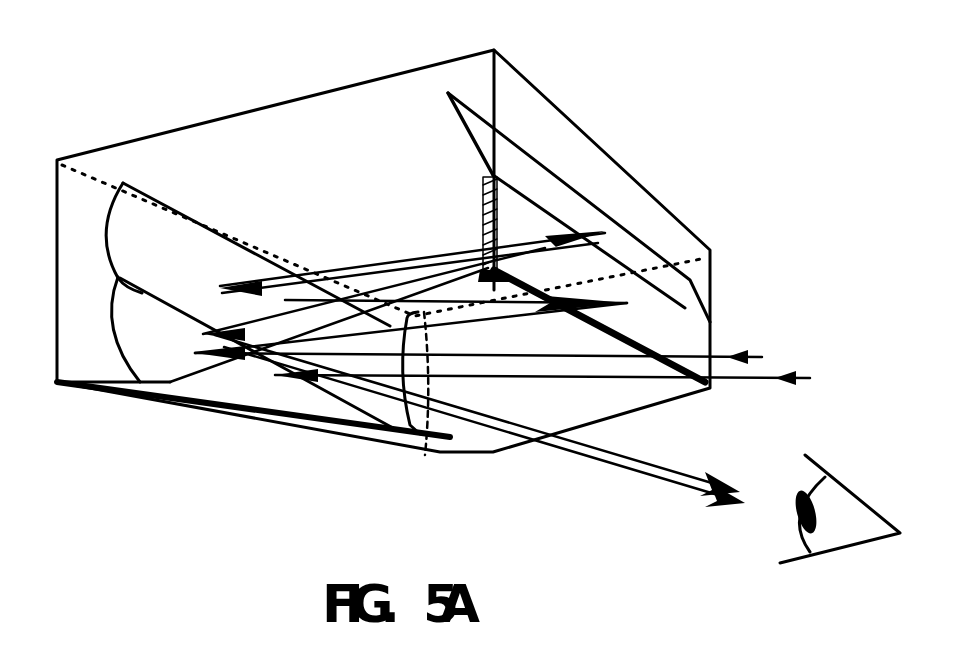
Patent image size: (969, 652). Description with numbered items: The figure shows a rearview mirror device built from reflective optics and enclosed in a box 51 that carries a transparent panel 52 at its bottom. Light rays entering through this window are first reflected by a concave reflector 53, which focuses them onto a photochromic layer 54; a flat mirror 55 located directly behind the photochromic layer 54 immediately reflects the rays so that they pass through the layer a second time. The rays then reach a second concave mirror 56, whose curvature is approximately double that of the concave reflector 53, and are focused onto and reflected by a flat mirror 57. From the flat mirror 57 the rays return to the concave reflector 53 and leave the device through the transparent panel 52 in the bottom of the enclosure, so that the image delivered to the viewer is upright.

The box 51 is at (230, 115).
The transparent panel 52 is at (577, 405).
The concave reflector 53 is at (147, 340).
The photochromic layer 54 is at (483, 198).
The flat mirror 55 is at (653, 316).
The second concave mirror 56 is at (143, 222).
The flat mirror 57 is at (546, 193).